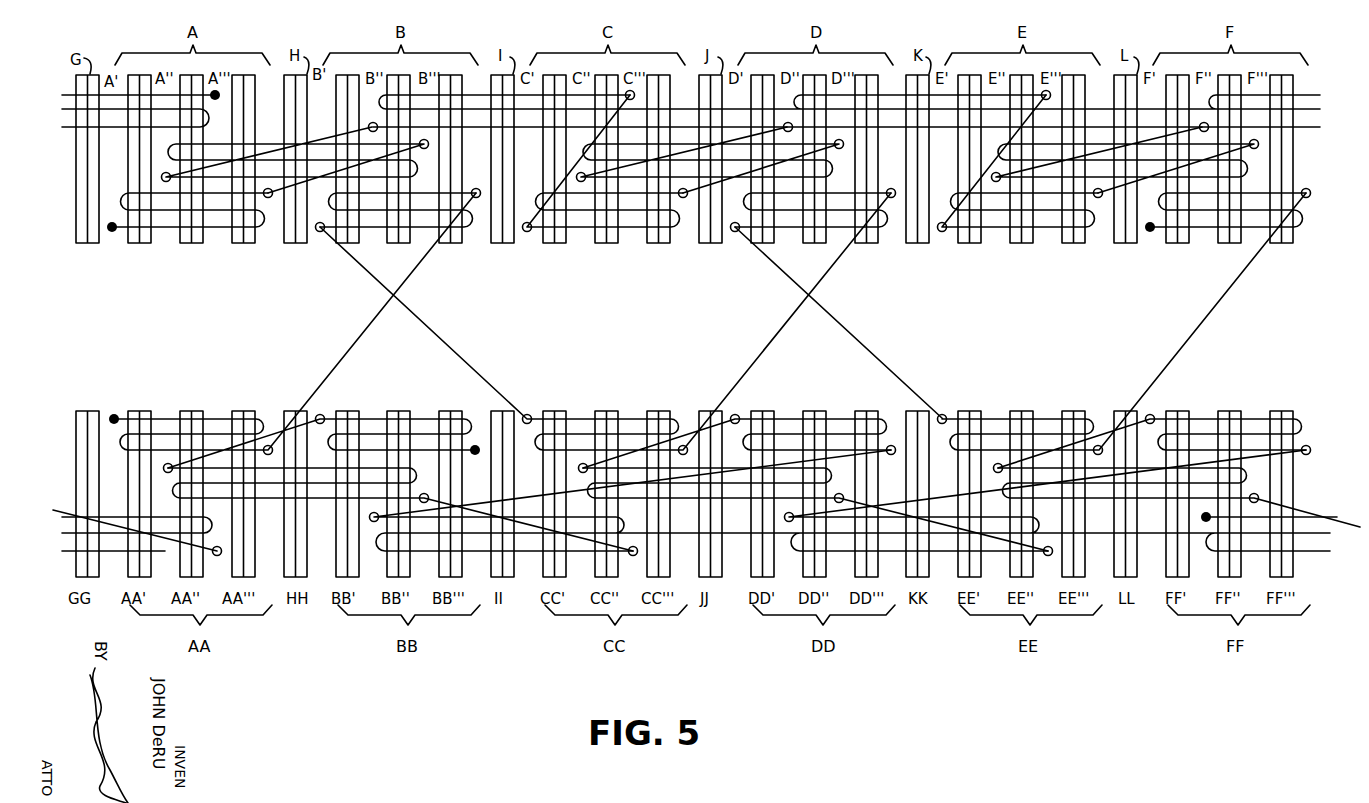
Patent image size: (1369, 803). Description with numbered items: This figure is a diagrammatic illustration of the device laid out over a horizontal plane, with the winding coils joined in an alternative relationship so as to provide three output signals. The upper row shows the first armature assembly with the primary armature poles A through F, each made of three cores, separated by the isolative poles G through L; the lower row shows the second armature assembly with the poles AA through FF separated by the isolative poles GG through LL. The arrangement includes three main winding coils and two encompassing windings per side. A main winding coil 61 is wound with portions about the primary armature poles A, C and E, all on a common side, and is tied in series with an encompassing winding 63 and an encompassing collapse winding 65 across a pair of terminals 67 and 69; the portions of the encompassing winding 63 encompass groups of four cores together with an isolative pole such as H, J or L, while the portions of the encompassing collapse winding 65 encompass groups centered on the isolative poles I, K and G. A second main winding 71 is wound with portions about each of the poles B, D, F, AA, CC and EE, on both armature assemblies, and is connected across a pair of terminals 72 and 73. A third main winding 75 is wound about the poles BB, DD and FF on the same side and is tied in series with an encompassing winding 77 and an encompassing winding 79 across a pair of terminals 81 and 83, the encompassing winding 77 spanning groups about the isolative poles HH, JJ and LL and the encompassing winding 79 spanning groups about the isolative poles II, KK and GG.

The main winding coil 61 is at (218, 231).
The encompassing winding 63 is at (268, 144).
The encompassing collapse winding 65 is at (118, 127).
The terminal 67 is at (110, 233).
The terminal 69 is at (215, 101).
The second main winding 71 is at (475, 231).
The terminal 72 is at (115, 415).
The terminal 73 is at (1152, 233).
The third main winding 75 is at (426, 417).
The encompassing winding 77 is at (273, 499).
The encompassing winding 79 is at (117, 553).
The terminal 81 is at (476, 455).
The terminal 83 is at (1205, 521).